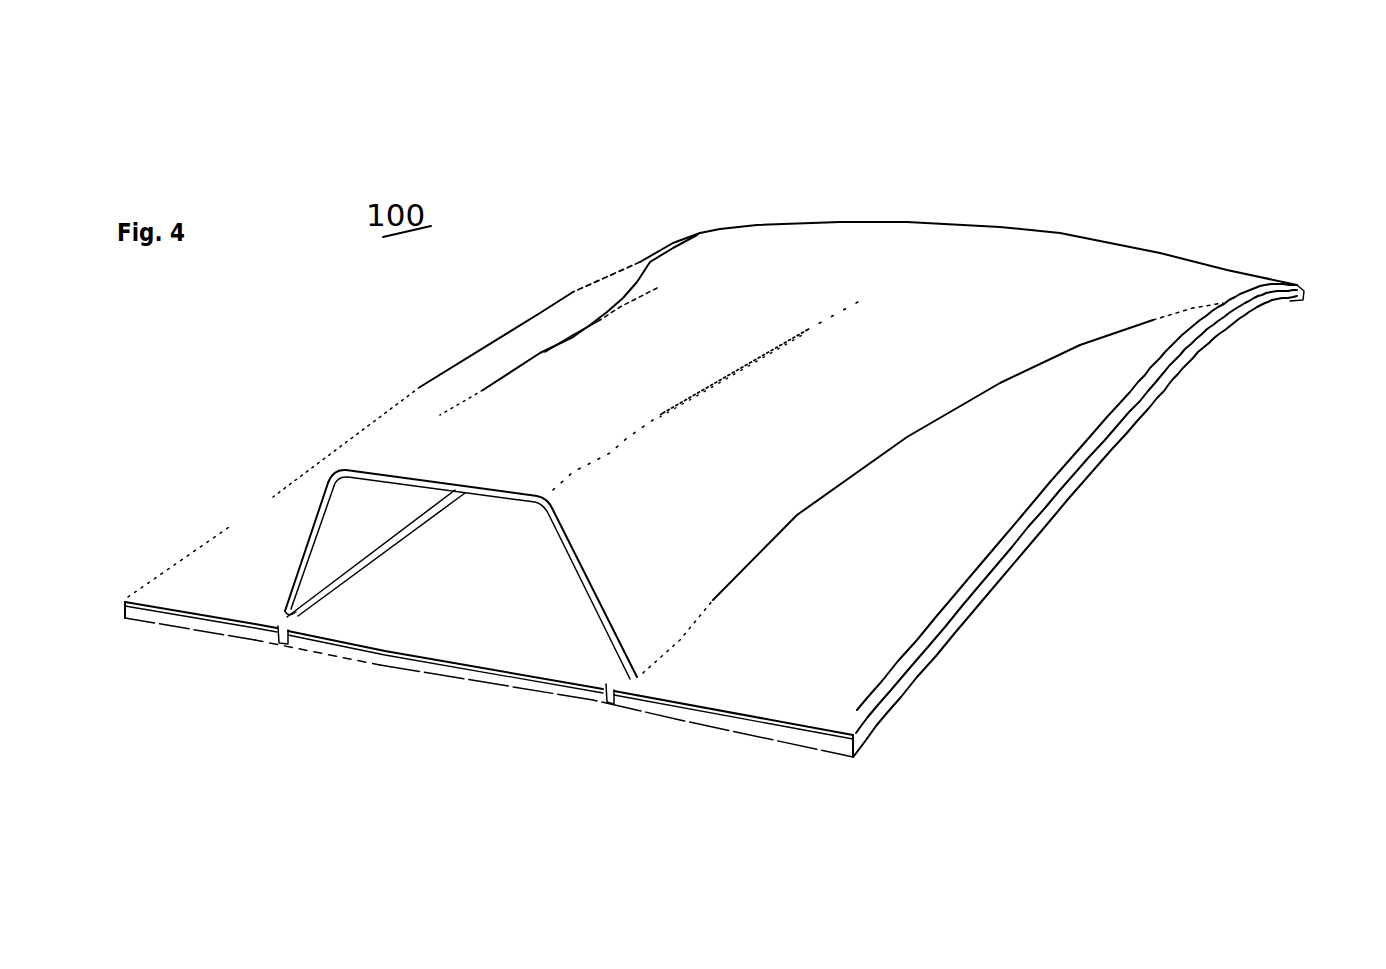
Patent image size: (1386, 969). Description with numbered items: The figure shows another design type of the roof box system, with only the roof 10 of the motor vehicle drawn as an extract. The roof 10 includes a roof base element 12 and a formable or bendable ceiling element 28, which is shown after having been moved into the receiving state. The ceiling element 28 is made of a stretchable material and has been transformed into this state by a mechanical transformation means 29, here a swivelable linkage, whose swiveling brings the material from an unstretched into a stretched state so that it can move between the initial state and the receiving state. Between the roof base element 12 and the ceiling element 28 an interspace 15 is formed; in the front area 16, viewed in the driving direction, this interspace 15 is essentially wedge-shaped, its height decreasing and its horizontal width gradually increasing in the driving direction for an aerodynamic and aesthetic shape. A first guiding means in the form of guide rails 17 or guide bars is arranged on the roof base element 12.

The roof 10 is at (1240, 494).
The roof base element 12 is at (488, 633).
The interspace 15 is at (534, 600).
The front area 16 is at (1024, 181).
The guide rails 17 is at (281, 636).
The ceiling element 28 is at (453, 450).
The transformation means 29 is at (322, 505).